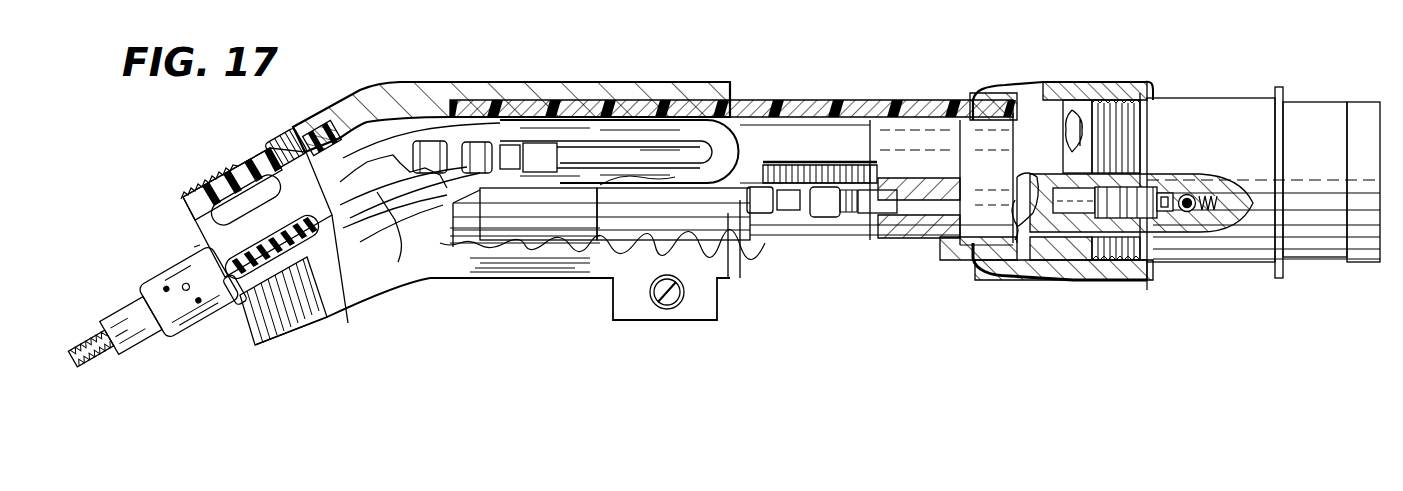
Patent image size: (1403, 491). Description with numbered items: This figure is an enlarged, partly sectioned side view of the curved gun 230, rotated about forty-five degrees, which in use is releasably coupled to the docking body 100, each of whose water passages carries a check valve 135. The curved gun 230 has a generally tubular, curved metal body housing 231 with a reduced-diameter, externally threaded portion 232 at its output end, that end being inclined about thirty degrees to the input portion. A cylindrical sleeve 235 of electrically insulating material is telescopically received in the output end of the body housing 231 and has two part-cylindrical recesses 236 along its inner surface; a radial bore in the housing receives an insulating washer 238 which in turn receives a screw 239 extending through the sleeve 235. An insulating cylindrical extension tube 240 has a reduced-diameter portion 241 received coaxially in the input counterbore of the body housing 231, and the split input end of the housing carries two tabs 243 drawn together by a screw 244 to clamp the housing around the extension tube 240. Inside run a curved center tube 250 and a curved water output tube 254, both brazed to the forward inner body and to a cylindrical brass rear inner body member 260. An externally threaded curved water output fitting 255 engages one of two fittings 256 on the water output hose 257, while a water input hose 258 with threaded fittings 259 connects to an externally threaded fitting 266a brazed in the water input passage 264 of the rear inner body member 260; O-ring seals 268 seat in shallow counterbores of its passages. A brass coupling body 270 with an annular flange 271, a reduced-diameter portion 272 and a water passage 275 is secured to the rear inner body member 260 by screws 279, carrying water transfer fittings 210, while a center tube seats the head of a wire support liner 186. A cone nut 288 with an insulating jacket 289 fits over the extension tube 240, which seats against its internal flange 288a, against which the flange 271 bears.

The docking body 100 is at (1234, 88).
The check valve 135 is at (1162, 224).
The wire support liner 186 is at (98, 364).
The water transfer fittings 210 is at (1068, 220).
The curved gun 230 is at (642, 51).
The body housing 231 is at (449, 80).
The externally threaded portion 232 is at (198, 181).
The cylindrical sleeve 235 is at (194, 230).
The part-cylindrical recesses 236 is at (340, 215).
The insulating washer 238 is at (276, 134).
The screw 239 is at (312, 134).
The extension tube 240 is at (842, 100).
The reduced-diameter portion 241 is at (556, 114).
The tabs 243 is at (616, 304).
The screw 244 is at (668, 304).
The curved center tube 250 is at (492, 268).
The curved water output tube 254 is at (433, 195).
The curved water output fitting 255 is at (372, 152).
The fittings 256 is at (487, 140).
The water output hose 257 is at (738, 136).
The water input hose 258 is at (742, 208).
The threaded fittings 259 is at (243, 310).
The rear inner body member 260 is at (895, 120).
The water input passage 264 is at (928, 208).
The externally threaded fitting 266a is at (910, 180).
The O-ring seals 268 is at (951, 234).
The coupling body 270 is at (1022, 96).
The annular flange 271 is at (1072, 86).
The reduced-diameter portion 272 is at (988, 248).
The water passage 275 is at (1024, 208).
The screws 279 is at (1036, 136).
The cone nut 288 is at (1113, 275).
The internal flange 288a is at (1032, 98).
The insulating jacket 289 is at (1174, 54).